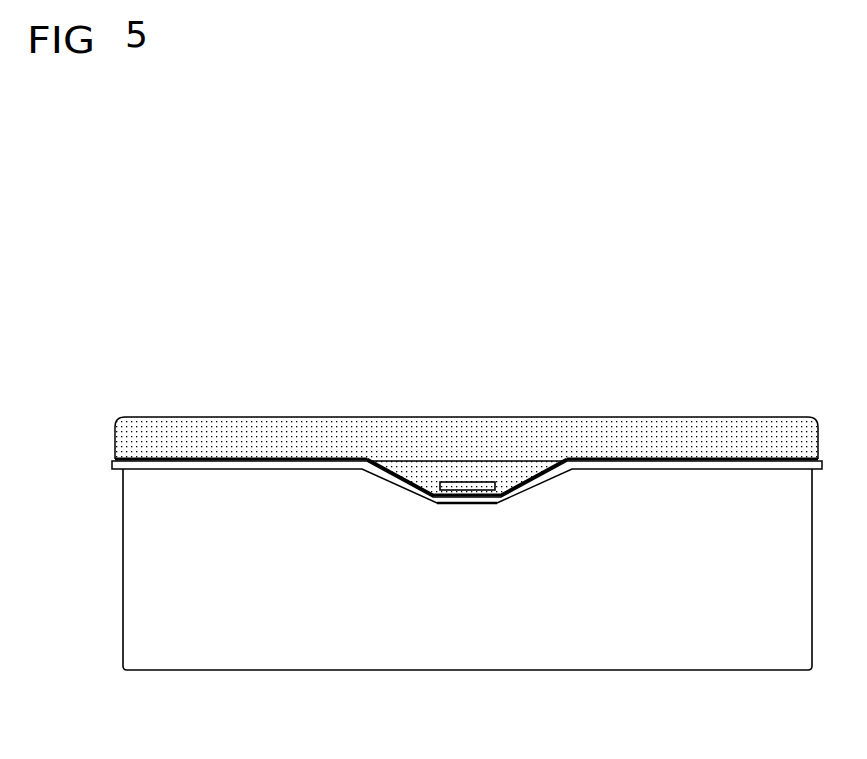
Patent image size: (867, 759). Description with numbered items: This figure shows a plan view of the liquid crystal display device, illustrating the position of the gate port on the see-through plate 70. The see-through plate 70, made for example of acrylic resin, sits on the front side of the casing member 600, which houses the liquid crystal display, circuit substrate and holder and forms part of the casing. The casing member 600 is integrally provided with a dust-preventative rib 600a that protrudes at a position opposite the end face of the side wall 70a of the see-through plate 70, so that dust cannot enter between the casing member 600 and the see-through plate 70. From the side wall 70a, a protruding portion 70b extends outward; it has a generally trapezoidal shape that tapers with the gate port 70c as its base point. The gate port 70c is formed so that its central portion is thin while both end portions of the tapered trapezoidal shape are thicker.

The see-through plate 70 is at (622, 418).
The side wall 70a is at (295, 435).
The protruding portion 70b is at (423, 470).
The gate port 70c is at (470, 487).
The casing member 600 is at (410, 633).
The dust-preventative rib 600a is at (188, 467).